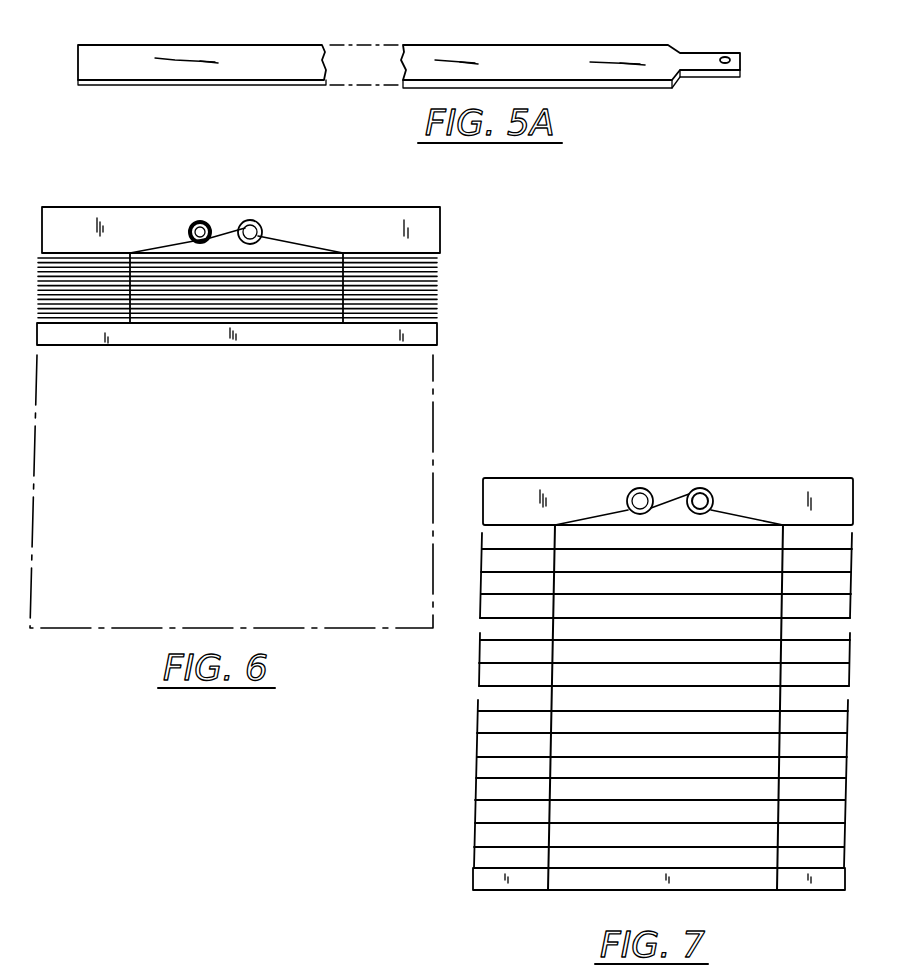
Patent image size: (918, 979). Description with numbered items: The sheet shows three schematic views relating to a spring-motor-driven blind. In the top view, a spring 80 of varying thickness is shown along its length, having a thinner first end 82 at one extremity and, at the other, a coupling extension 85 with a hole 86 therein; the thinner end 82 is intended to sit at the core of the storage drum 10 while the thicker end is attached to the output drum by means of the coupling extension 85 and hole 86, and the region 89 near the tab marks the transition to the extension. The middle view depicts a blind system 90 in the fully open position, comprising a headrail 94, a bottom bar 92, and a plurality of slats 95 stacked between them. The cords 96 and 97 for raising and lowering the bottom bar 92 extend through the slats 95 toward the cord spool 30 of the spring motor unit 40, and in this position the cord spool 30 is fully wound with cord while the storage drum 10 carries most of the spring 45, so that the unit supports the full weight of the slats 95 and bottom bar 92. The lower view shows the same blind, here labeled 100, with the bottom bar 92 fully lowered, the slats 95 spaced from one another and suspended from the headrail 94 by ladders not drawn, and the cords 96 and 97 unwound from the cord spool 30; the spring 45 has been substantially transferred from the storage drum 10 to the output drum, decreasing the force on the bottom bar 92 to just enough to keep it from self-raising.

In FIG. 6, the storage drum 10 is at (192, 224).
In FIG. 7, the storage drum 10 is at (628, 490).
In FIG. 6, the cord spool 30 is at (262, 224).
In FIG. 7, the cord spool 30 is at (714, 490).
In FIG. 6, the spring motor unit 40 is at (250, 218).
In FIG. 7, the spring motor unit 40 is at (688, 480).
In FIG. 6, the spring 45 is at (222, 236).
In FIG. 7, the spring 45 is at (660, 498).
In FIG. 5A, the spring 80 is at (424, 44).
In FIG. 5A, the thinner first end 82 is at (78, 50).
In FIG. 5A, the coupling extension 85 is at (742, 71).
In FIG. 5A, the hole 86 is at (728, 56).
In FIG. 5A, the slat shoulder 89 is at (663, 60).
In FIG. 6, the blind system 90 is at (271, 387).
In FIG. 6, the bottom bar 92 is at (236, 341).
In FIG. 7, the bottom bar 92 is at (670, 882).
In FIG. 6, the headrail 94 is at (408, 238).
In FIG. 7, the headrail 94 is at (814, 494).
In FIG. 6, the slats 95 is at (437, 290).
In FIG. 7, the slats 95 is at (478, 716).
In FIG. 6, the cord 96 is at (347, 318).
In FIG. 7, the cord 96 is at (778, 826).
In FIG. 6, the cord 97 is at (124, 316).
In FIG. 7, the cord 97 is at (548, 808).
In FIG. 7, the blind assembly (lowered) 100 is at (609, 669).